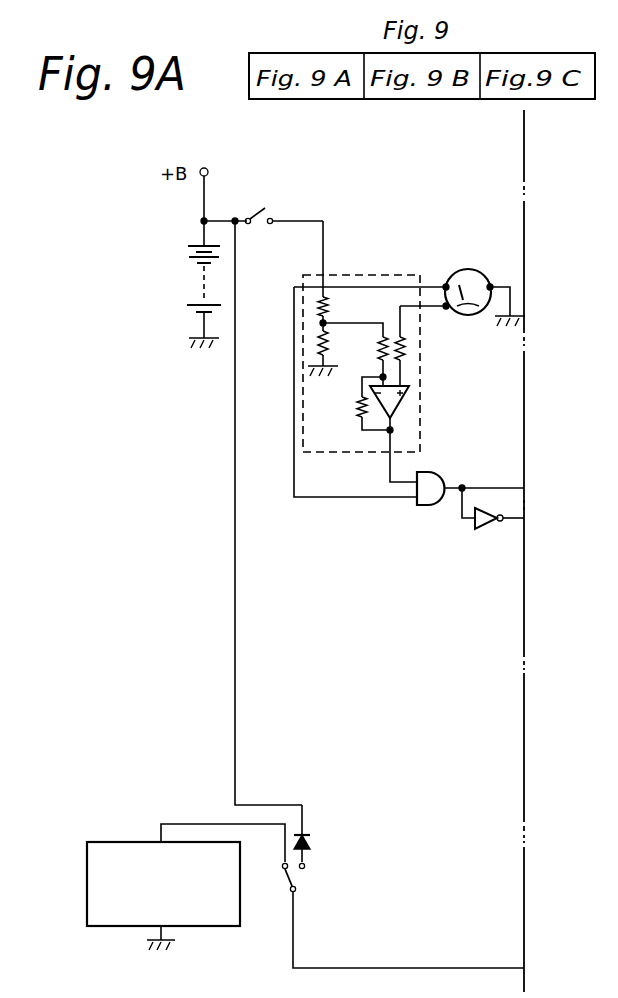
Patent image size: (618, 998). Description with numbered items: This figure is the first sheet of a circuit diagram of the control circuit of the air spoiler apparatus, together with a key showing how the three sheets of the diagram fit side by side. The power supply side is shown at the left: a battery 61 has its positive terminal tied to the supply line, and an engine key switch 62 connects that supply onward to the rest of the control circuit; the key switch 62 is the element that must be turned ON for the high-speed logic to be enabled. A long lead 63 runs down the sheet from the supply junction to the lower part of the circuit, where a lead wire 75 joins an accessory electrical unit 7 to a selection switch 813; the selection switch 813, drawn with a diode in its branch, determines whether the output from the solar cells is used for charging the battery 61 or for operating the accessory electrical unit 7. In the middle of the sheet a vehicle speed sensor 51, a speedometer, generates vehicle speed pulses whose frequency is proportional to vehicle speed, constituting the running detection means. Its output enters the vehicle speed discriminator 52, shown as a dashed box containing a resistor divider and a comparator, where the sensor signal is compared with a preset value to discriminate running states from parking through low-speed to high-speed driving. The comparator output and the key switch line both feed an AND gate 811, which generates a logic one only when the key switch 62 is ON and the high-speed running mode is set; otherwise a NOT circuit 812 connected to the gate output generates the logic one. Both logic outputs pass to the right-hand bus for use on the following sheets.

The accessory electrical unit 7 is at (129, 838).
The vehicle speed sensor 51 is at (467, 268).
The vehicle speed discriminator 52 is at (424, 383).
The battery 61 is at (196, 282).
The engine key switch 62 is at (255, 211).
The power supply line 63 is at (232, 702).
The lead wire 75 is at (182, 822).
The AND gate 811 is at (441, 478).
The NOT circuit 812 is at (487, 532).
The selection switch 813 is at (300, 880).